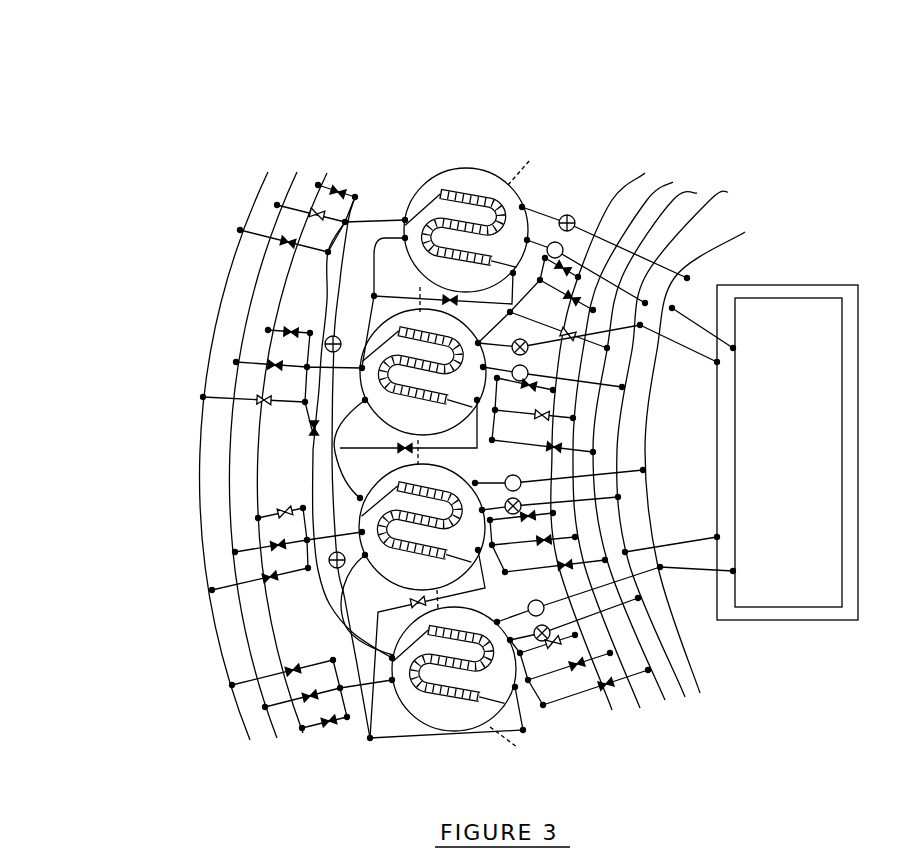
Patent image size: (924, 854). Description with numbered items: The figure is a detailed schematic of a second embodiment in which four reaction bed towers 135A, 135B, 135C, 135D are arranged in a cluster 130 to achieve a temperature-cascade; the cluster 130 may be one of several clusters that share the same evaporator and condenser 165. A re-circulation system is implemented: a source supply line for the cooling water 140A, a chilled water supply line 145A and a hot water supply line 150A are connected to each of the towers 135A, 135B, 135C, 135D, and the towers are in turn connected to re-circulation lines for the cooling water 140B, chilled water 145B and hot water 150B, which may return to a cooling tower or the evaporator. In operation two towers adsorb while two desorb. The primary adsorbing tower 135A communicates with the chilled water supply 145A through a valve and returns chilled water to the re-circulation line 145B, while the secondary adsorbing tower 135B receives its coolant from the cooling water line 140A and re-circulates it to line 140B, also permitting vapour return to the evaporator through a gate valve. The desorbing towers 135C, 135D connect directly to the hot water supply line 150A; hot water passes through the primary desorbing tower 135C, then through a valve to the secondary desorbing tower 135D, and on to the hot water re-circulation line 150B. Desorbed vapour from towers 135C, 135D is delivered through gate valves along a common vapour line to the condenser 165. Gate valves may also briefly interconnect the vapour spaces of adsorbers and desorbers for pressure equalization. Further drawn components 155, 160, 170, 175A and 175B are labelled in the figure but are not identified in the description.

The cluster 130 is at (650, 102).
The primary adsorbing tower 135A is at (525, 190).
The secondary adsorbing tower 135B is at (381, 314).
The primary desorbing tower 135C is at (354, 514).
The secondary desorbing tower 135D is at (399, 632).
The cooling water source supply line 140A is at (262, 203).
The cooling water re-circulation line 140B is at (664, 186).
The chilled water supply line 145A is at (273, 718).
The chilled water re-circulation line 145B is at (688, 202).
The hot water supply line 150A is at (318, 184).
The hot water re-circulation line 150B is at (613, 708).
The outer manifold wall 155 is at (748, 233).
The outer conduit 160 is at (693, 686).
The condenser 165 is at (785, 624).
The tank housing 170 is at (796, 282).
The first bypass line 175A is at (324, 398).
The second bypass line 175B is at (322, 474).